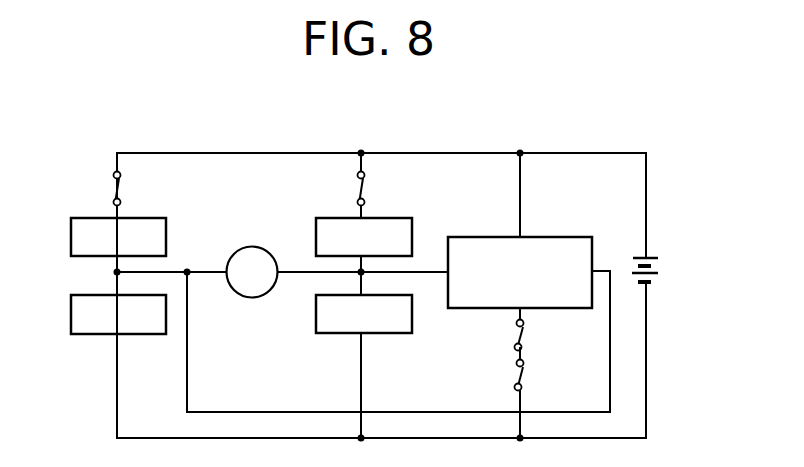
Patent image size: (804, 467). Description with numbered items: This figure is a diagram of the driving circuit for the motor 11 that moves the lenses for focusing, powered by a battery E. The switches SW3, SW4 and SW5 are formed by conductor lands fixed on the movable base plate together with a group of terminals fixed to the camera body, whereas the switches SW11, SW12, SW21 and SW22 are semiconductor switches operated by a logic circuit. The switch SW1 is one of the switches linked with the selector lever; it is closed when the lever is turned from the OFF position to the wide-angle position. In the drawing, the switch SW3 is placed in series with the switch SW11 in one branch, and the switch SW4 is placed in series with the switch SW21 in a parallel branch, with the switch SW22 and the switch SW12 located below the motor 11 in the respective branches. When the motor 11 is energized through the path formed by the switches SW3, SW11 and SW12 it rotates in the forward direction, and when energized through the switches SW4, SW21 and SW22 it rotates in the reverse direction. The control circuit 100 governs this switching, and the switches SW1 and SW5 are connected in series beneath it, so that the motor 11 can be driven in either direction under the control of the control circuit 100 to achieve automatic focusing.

The switch Sw3 SW3 is at (113, 195).
The switch Sw4 SW4 is at (357, 195).
The switch Sw11 SW11 is at (118, 237).
The switch Sw22 SW22 is at (118, 314).
The switch Sw21 SW21 is at (364, 237).
The switch Sw12 SW12 is at (364, 314).
The switch Sw1 SW1 is at (515, 342).
The switch Sw5 SW5 is at (515, 385).
The motor 11 is at (253, 246).
The control circuit 100 is at (553, 237).
The battery (power source) E is at (648, 257).